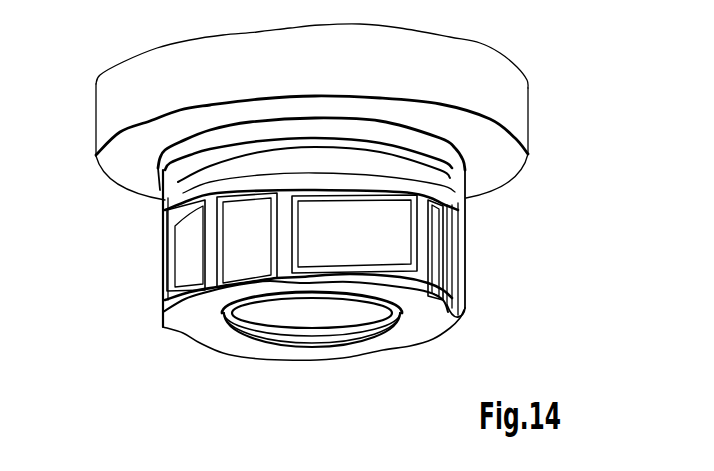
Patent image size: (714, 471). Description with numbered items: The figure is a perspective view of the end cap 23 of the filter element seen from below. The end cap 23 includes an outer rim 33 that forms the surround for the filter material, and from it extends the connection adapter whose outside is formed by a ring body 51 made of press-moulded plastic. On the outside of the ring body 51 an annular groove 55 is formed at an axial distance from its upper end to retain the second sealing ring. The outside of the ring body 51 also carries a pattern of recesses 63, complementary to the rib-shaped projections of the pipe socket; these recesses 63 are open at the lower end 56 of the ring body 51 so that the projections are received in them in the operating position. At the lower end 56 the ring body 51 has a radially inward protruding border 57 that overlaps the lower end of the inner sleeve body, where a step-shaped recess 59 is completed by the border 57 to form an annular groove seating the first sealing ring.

The outer rim 33 is at (530, 95).
The end cap 23 is at (528, 150).
The annular groove 55 is at (215, 182).
The ring body 51 is at (212, 250).
The recesses 63 is at (457, 243).
The lower end 56 is at (427, 322).
The border 57 is at (252, 333).
The recess 59 is at (363, 315).